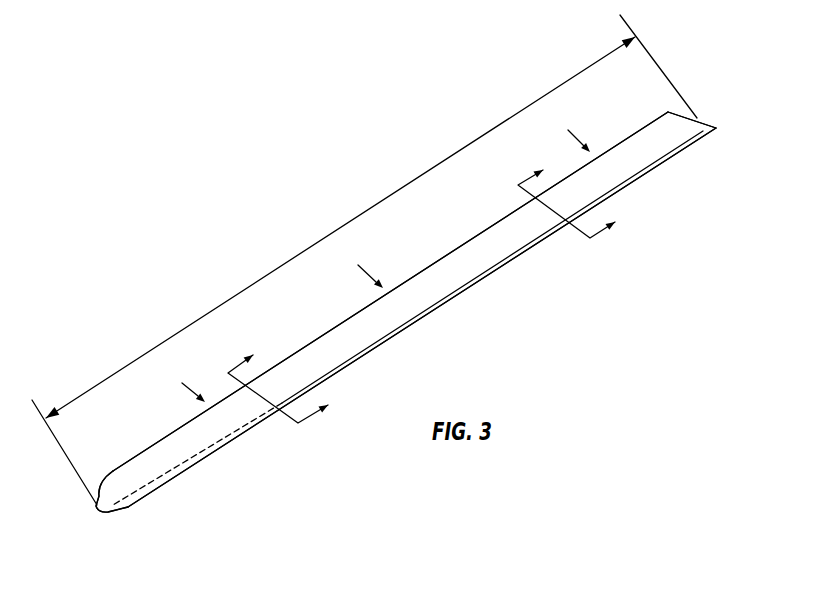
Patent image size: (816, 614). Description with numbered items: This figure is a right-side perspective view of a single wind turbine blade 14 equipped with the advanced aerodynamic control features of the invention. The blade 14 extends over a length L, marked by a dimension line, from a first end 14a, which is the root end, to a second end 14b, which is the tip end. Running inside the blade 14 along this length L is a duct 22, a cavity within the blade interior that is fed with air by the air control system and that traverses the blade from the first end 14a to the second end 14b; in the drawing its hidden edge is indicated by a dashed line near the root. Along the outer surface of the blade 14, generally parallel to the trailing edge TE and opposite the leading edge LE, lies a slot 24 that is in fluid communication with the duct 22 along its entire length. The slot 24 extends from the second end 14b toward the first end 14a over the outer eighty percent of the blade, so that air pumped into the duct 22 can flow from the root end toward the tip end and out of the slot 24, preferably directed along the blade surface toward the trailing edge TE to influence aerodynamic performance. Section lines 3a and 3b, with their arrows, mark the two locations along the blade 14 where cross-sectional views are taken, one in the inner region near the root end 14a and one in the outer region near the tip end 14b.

The blade 14 is at (437, 276).
The first end 14a is at (103, 508).
The second end 14b is at (697, 119).
The duct 22 is at (191, 452).
The slot 24 is at (407, 327).
The leading edge LE is at (333, 327).
The trailing edge TE is at (497, 270).
The length L is at (364, 260).
The section line 3a- 3a is at (267, 378).
The section line 3b- 3b is at (501, 209).